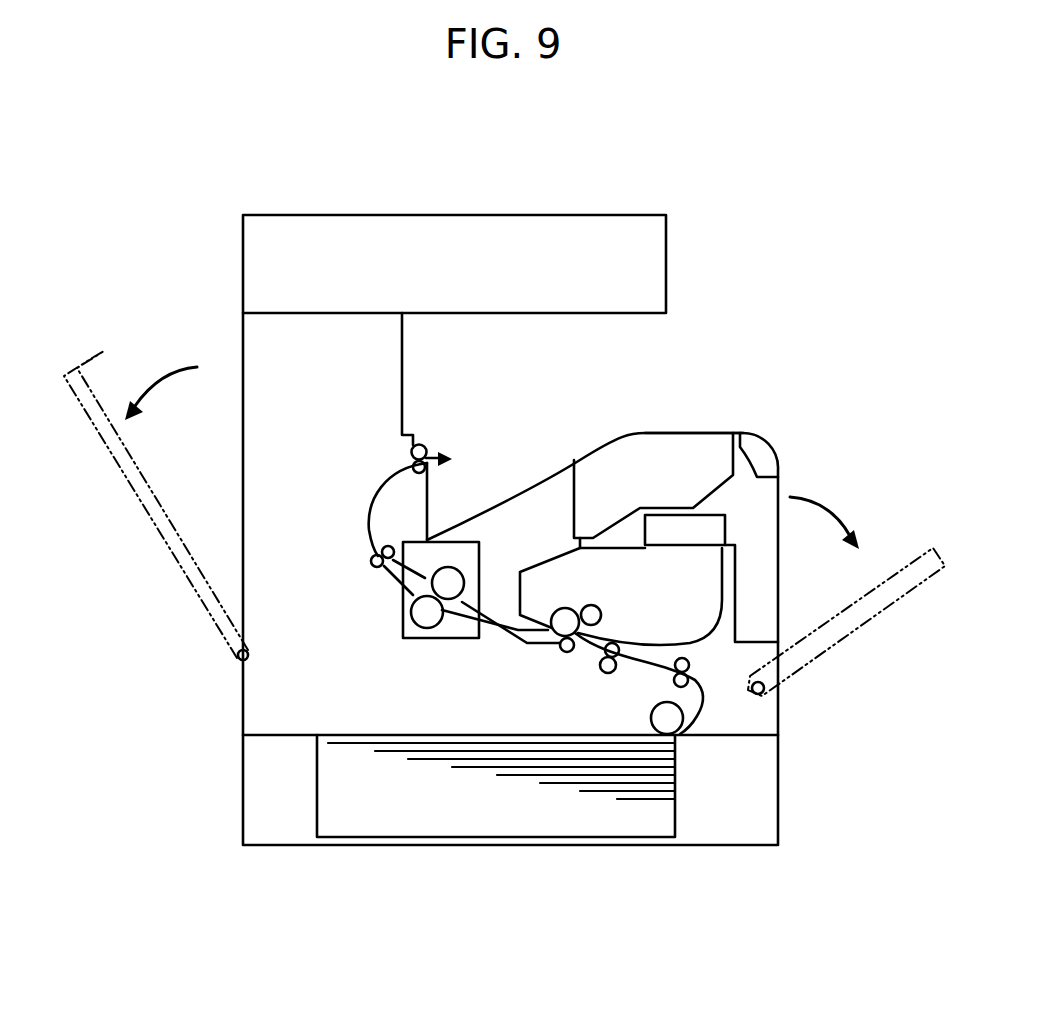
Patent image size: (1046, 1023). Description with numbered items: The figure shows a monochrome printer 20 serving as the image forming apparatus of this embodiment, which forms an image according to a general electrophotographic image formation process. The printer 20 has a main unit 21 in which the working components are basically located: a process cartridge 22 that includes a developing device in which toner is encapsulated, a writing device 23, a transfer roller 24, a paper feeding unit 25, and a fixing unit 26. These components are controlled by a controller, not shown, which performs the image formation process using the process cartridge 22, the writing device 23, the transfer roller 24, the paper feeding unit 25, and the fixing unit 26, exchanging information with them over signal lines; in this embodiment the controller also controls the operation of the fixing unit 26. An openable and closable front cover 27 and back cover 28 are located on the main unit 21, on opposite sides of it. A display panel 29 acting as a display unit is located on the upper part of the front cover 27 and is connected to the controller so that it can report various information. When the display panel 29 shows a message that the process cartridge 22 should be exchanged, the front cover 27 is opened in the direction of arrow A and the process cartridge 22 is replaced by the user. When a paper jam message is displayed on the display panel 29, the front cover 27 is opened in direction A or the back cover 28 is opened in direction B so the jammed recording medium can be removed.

The printer 20 is at (774, 297).
The main unit 21 is at (258, 711).
The process cartridge 22 is at (724, 598).
The writing device 23 is at (607, 454).
The transfer roller 24 is at (565, 656).
The paper feeding unit 25 is at (682, 741).
The fixing unit 26 is at (452, 569).
The front cover 27 is at (848, 642).
The back cover 28 is at (125, 487).
The display panel 29 is at (760, 458).